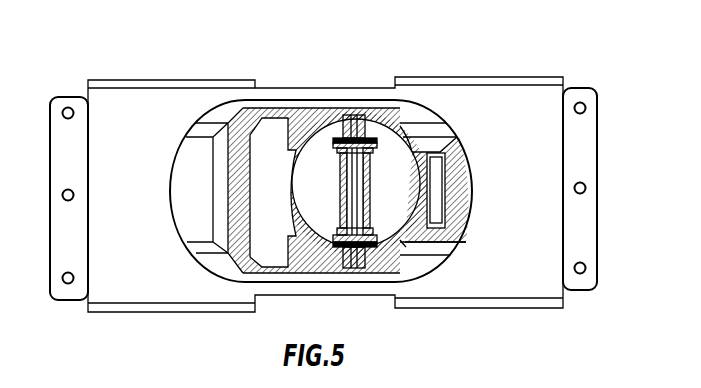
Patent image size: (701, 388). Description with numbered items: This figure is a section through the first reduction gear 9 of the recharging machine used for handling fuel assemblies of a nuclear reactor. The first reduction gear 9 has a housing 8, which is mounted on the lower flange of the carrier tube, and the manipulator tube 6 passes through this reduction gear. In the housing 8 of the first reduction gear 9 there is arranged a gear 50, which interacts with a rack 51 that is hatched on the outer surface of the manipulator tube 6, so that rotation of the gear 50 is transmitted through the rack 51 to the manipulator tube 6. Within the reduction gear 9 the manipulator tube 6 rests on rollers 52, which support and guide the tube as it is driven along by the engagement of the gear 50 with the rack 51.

The manipulator tube 6 is at (253, 258).
The housing 8 is at (525, 92).
The first reduction gear 9 is at (112, 311).
The gear 50 is at (468, 155).
The rack 51 is at (432, 215).
The rollers 52 is at (232, 118).